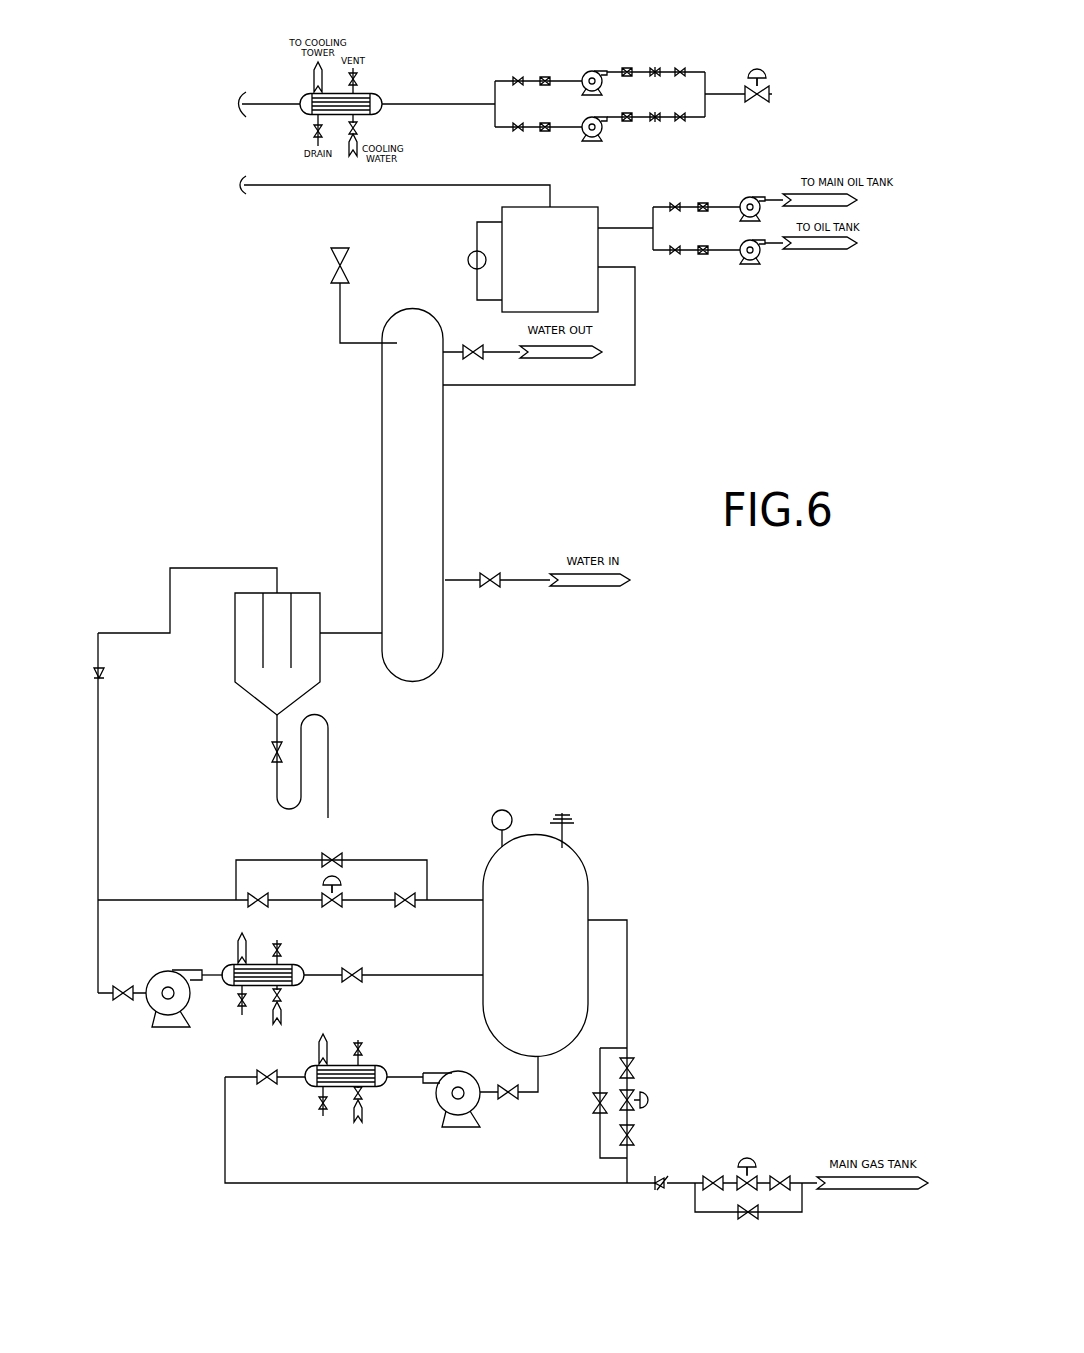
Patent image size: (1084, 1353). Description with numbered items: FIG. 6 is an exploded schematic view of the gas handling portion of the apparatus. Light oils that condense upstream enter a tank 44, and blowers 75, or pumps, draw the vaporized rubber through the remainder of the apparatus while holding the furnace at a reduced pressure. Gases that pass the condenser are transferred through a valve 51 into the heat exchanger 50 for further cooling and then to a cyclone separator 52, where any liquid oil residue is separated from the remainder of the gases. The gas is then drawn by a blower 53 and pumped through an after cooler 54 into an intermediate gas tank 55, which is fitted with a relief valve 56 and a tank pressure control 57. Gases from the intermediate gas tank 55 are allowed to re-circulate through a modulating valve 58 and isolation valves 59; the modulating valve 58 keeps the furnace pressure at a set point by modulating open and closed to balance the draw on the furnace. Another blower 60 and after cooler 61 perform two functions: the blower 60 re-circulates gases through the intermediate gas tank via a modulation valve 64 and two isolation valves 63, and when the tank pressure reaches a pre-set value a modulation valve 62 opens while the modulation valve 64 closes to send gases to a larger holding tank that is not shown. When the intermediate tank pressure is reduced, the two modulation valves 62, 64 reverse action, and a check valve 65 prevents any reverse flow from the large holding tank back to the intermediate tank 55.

The tank 44 is at (598, 257).
The heat exchanger 50 is at (382, 495).
The valve 51 is at (336, 275).
The cyclone separator 52 is at (322, 593).
The blower 53 is at (153, 1020).
The after cooler 54 is at (230, 987).
The intermediate gas tank 55 is at (588, 895).
The relief valve 56 is at (566, 815).
The tank pressure control 57 is at (505, 810).
The modulating valve 58 is at (337, 907).
The isolation valves 59 is at (408, 907).
The blower 60 is at (470, 1125).
The after cooler 61 is at (310, 1086).
The modulation valve 62 is at (747, 1158).
The isolation valves 63 is at (636, 1138).
The modulation valve 64 is at (650, 1100).
The check valve 65 is at (782, 1175).
The blower 75 is at (594, 72).